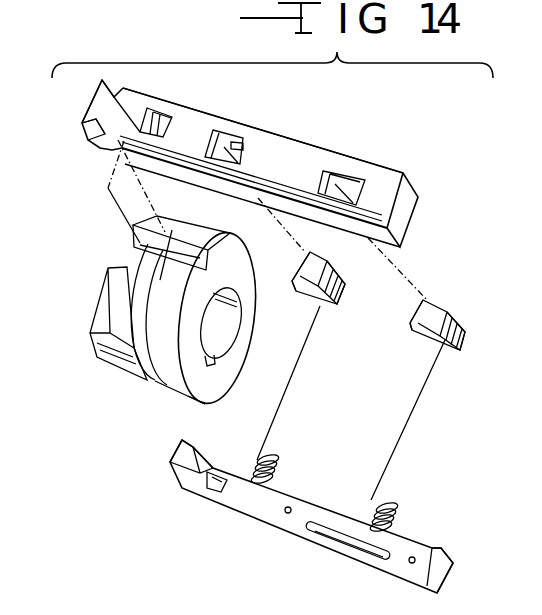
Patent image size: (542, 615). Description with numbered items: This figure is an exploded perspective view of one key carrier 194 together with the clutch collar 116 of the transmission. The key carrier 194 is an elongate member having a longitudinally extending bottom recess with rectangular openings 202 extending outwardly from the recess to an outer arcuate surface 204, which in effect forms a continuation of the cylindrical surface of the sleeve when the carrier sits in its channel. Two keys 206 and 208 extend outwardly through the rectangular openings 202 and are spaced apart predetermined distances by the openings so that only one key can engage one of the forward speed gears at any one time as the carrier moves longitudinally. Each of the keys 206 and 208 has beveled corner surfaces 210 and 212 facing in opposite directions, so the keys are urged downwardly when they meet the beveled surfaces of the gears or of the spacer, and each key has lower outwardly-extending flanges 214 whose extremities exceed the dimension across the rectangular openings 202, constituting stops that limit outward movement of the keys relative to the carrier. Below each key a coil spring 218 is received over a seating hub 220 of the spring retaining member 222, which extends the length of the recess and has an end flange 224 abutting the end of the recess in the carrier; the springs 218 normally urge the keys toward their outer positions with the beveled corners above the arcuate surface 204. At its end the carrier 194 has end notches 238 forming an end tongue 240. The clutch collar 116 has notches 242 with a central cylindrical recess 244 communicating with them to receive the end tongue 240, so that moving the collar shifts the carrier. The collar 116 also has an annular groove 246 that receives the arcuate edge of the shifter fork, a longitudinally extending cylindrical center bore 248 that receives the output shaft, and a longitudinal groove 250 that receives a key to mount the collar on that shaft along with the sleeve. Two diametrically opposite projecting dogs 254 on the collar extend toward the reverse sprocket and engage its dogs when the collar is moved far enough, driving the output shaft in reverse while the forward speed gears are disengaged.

The clutch collar 116 is at (147, 317).
The key carrier 194 is at (401, 176).
The rectangular openings 202 is at (238, 142).
The outer arcuate surface 204 is at (284, 160).
The key 206 is at (337, 308).
The key 208 is at (463, 336).
The beveled corner surface 210 is at (343, 259).
The beveled corner surface 212 is at (299, 267).
The outwardly-extending flanges 214 is at (300, 287).
The coil spring 218 is at (273, 460).
The seating hub 220 is at (301, 523).
The spring retaining member 222 is at (200, 478).
The end flange 224 is at (453, 567).
The end notches 238 is at (115, 97).
The end tongue 240 is at (90, 104).
The notches 242 is at (226, 247).
The cylindrical recess 244 is at (163, 288).
The annular groove 246 is at (143, 378).
The center bore 248 is at (224, 338).
The longitudinal groove 250 is at (205, 395).
The projecting dogs 254 is at (89, 332).